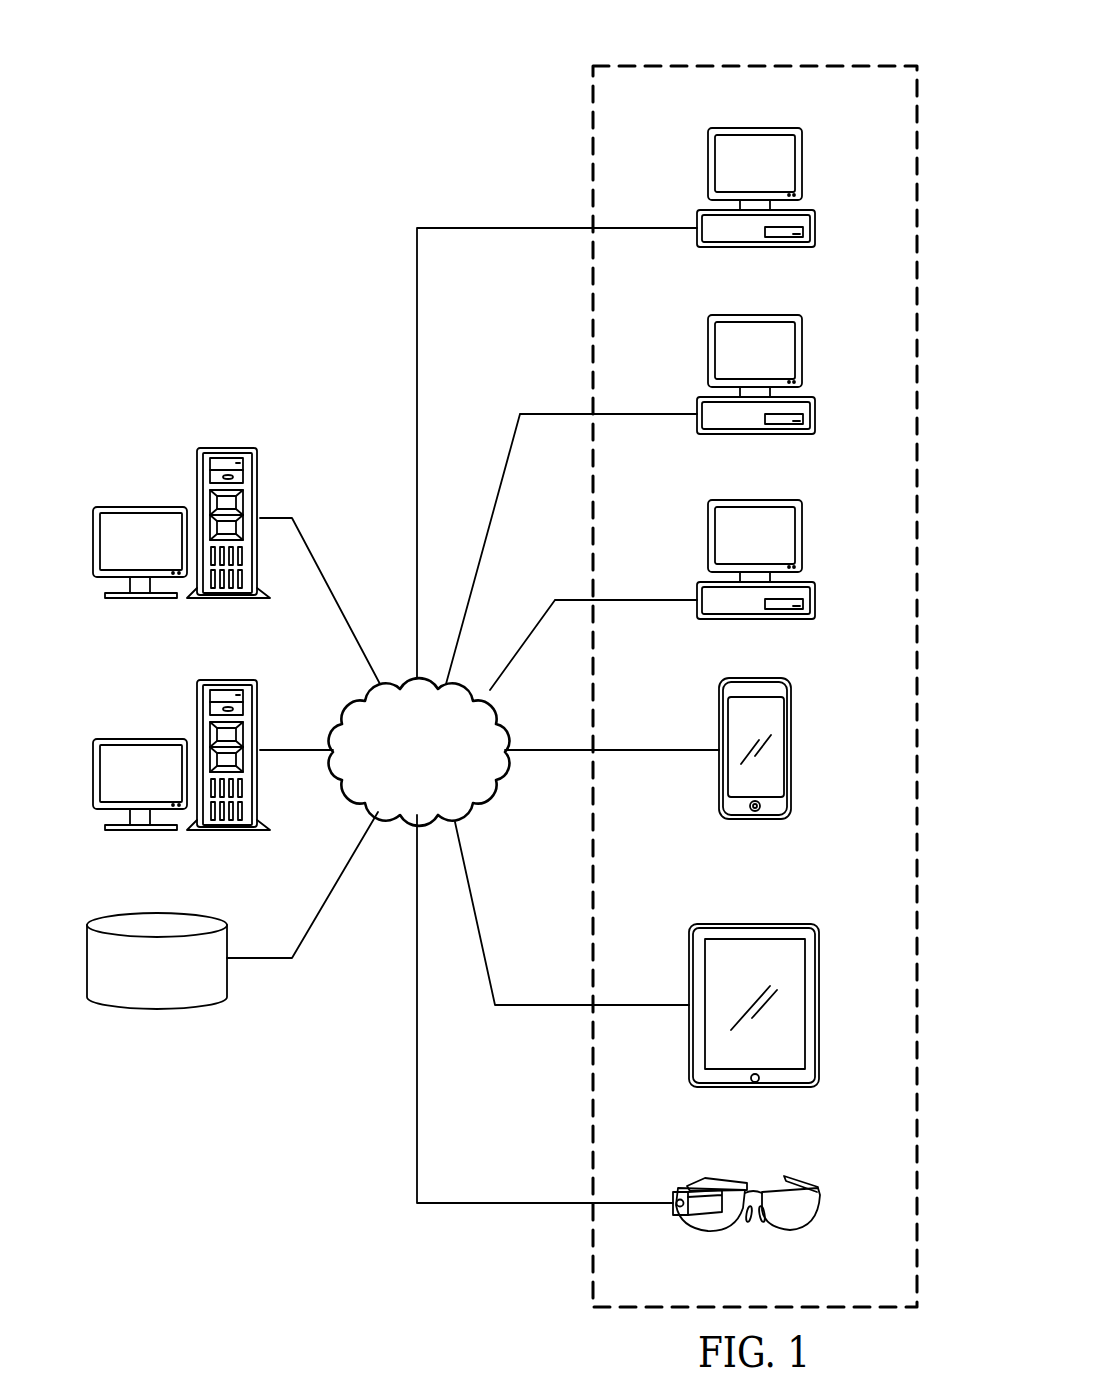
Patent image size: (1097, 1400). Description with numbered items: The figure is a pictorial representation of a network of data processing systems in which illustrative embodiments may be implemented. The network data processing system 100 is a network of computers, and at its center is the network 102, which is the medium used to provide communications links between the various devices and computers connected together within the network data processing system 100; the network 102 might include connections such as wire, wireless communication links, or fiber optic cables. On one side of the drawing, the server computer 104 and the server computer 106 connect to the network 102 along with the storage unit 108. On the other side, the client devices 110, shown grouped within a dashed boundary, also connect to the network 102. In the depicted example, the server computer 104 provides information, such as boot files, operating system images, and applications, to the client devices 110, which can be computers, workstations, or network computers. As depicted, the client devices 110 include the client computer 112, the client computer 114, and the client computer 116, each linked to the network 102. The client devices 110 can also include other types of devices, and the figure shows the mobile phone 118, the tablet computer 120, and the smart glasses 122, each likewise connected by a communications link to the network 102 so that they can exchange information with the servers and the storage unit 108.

The network data processing system 100 is at (278, 142).
The network 102 is at (396, 785).
The server computer 104 is at (186, 539).
The server computer 106 is at (186, 771).
The storage unit 108 is at (157, 1008).
The client devices 110 is at (822, 62).
The client computer 112 is at (767, 203).
The client computer 114 is at (767, 390).
The client computer 116 is at (767, 575).
The mobile phone 118 is at (771, 765).
The tablet computer 120 is at (791, 1021).
The smart glasses 122 is at (815, 1210).